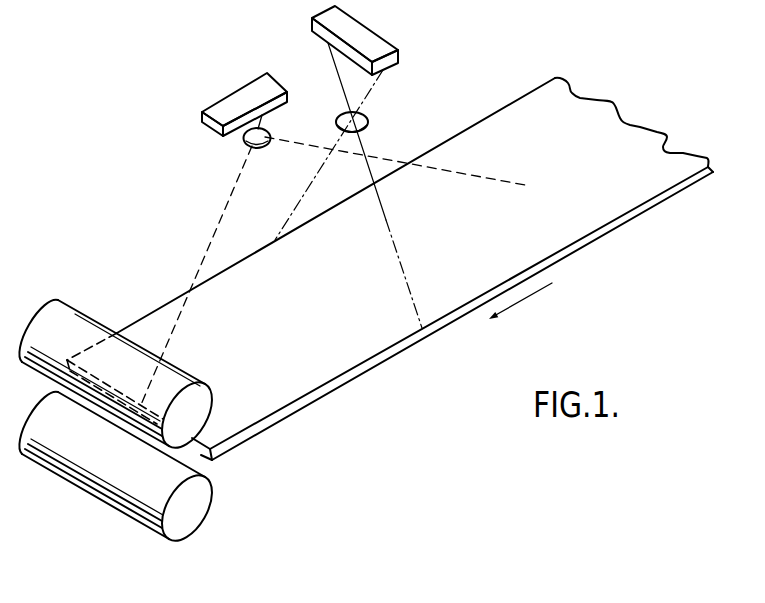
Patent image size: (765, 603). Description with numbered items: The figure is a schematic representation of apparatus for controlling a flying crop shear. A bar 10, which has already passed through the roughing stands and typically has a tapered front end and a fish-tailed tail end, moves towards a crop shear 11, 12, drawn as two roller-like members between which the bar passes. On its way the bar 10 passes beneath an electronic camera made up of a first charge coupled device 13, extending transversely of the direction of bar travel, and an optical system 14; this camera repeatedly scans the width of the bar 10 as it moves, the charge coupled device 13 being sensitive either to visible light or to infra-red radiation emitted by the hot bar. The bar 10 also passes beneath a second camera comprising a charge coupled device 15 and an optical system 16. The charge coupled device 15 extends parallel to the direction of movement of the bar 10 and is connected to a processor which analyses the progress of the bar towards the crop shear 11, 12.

The bar 10 is at (401, 352).
The crop shear 11 is at (64, 312).
The crop shear 12 is at (194, 517).
The first charge coupled device 13 is at (387, 43).
The optical system 14 is at (368, 116).
The charge coupled device 15 is at (216, 101).
The optical system 16 is at (244, 141).